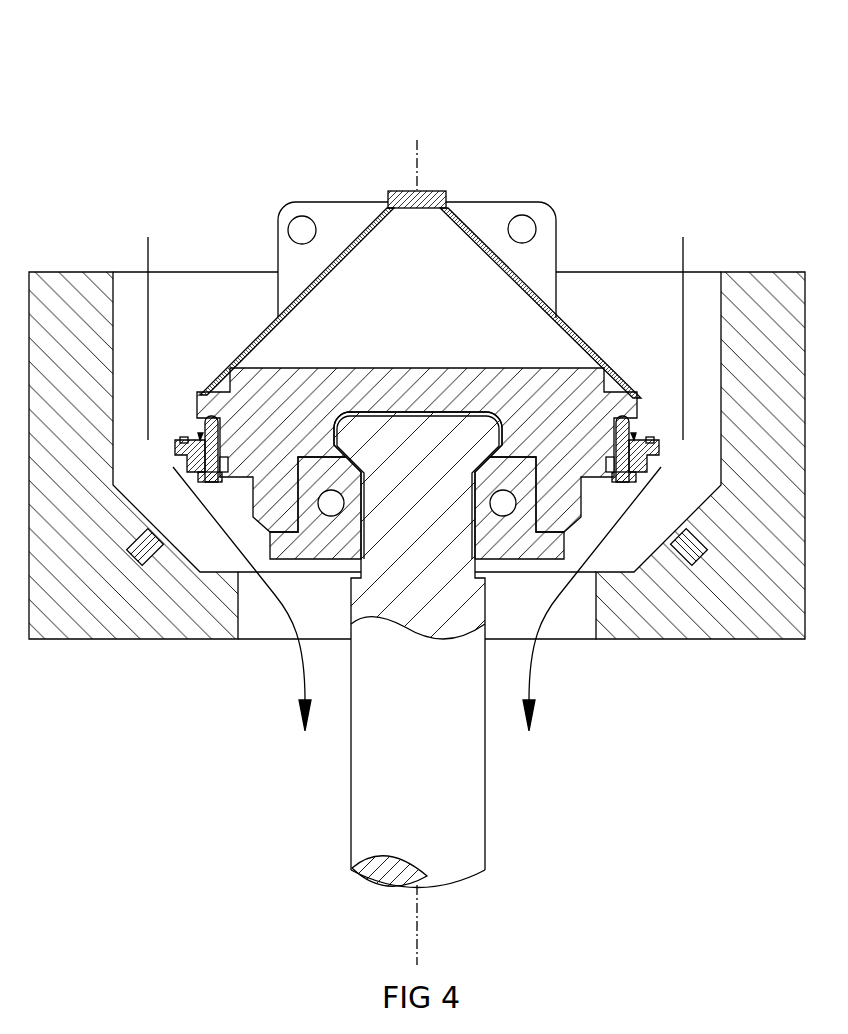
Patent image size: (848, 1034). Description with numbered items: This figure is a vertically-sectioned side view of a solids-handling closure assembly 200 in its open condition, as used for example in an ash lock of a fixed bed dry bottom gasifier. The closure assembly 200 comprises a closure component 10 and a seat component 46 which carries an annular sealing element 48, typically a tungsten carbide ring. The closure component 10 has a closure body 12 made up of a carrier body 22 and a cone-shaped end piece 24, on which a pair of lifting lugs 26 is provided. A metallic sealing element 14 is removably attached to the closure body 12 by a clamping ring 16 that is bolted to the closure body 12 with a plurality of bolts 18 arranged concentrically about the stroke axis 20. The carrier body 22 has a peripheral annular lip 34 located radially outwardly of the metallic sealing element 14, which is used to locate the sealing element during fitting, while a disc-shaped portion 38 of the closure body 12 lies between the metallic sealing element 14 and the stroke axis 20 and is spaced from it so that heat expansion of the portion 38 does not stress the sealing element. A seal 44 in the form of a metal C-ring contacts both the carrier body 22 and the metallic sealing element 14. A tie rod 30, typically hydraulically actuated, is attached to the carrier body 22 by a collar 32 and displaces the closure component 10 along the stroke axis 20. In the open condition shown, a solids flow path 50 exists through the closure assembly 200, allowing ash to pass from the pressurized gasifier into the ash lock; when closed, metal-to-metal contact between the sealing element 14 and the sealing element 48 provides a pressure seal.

The closure assembly 200 is at (735, 76).
The closure component 10 is at (597, 257).
The closure body 12 is at (597, 331).
The metallic sealing element 14 is at (195, 437).
The clamping ring 16 is at (192, 464).
The bolts 18 is at (203, 484).
The stroke axis 20 is at (418, 910).
The carrier body 22 is at (383, 368).
The cone-shaped end piece 24 is at (256, 322).
The lifting lugs 26 is at (312, 207).
The tie rod 30 is at (463, 763).
The collar 32 is at (332, 541).
The peripheral annular lip 34 is at (177, 449).
The disc-shaped portion 38 is at (200, 430).
The seal 44 is at (182, 436).
The seat component 46 is at (88, 607).
The annular sealing element 48 is at (132, 553).
The solids flow path 50 is at (145, 258).